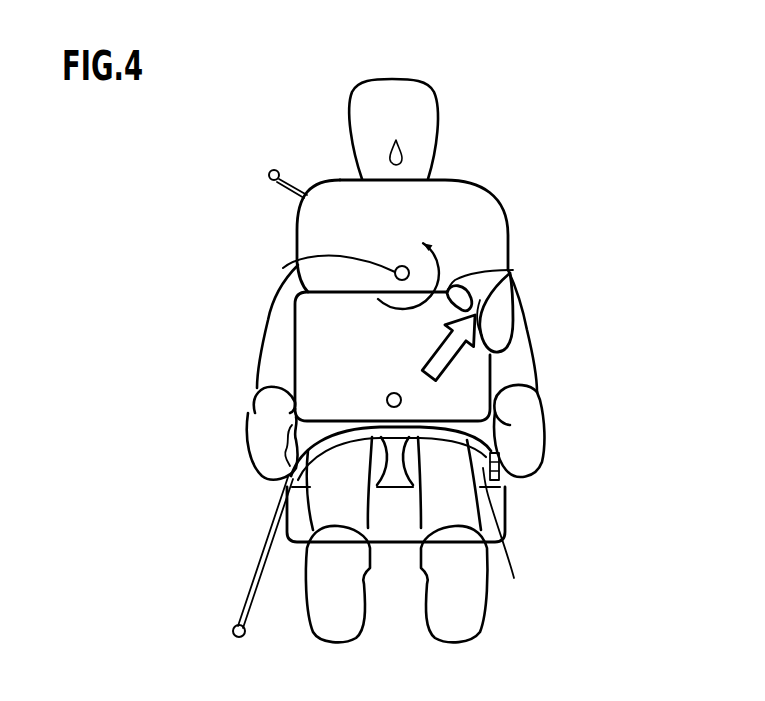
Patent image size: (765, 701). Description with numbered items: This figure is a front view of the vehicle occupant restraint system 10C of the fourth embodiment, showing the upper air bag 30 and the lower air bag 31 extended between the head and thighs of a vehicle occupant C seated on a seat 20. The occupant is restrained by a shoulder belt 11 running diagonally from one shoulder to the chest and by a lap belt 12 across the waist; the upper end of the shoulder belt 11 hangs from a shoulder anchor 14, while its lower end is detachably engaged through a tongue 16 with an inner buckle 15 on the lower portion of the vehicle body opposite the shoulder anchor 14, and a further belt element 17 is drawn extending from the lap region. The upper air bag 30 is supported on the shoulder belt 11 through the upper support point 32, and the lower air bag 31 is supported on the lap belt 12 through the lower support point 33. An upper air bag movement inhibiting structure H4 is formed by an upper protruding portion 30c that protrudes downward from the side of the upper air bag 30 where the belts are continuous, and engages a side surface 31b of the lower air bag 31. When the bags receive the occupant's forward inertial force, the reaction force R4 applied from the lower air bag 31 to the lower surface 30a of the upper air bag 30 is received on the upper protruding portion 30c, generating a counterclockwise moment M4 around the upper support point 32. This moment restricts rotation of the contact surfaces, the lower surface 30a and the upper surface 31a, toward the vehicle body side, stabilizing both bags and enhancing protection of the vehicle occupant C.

The vehicle occupant C is at (345, 96).
The vehicle occupant restraint system 10C is at (490, 124).
The upper air bag 30 is at (352, 217).
The lower air bag 31 is at (328, 390).
The upper support point 32 is at (283, 268).
The lower support point 33 is at (393, 393).
The shoulder anchor 14 is at (269, 175).
The shoulder belt 11 is at (290, 189).
The counterclockwise moment M4 is at (440, 287).
The upper air bag movement inhibiting structure H4 is at (522, 247).
The upper surface 31a is at (513, 270).
The lower surface 30a is at (470, 313).
The side surface 31b is at (490, 330).
The upper protruding portion 30c is at (498, 340).
The reaction force R4 is at (470, 358).
The tongue 16 is at (495, 462).
The inner buckle 15 is at (499, 470).
The seat 20 is at (520, 513).
The lap belt 12 is at (508, 539).
The strap 17 is at (232, 631).